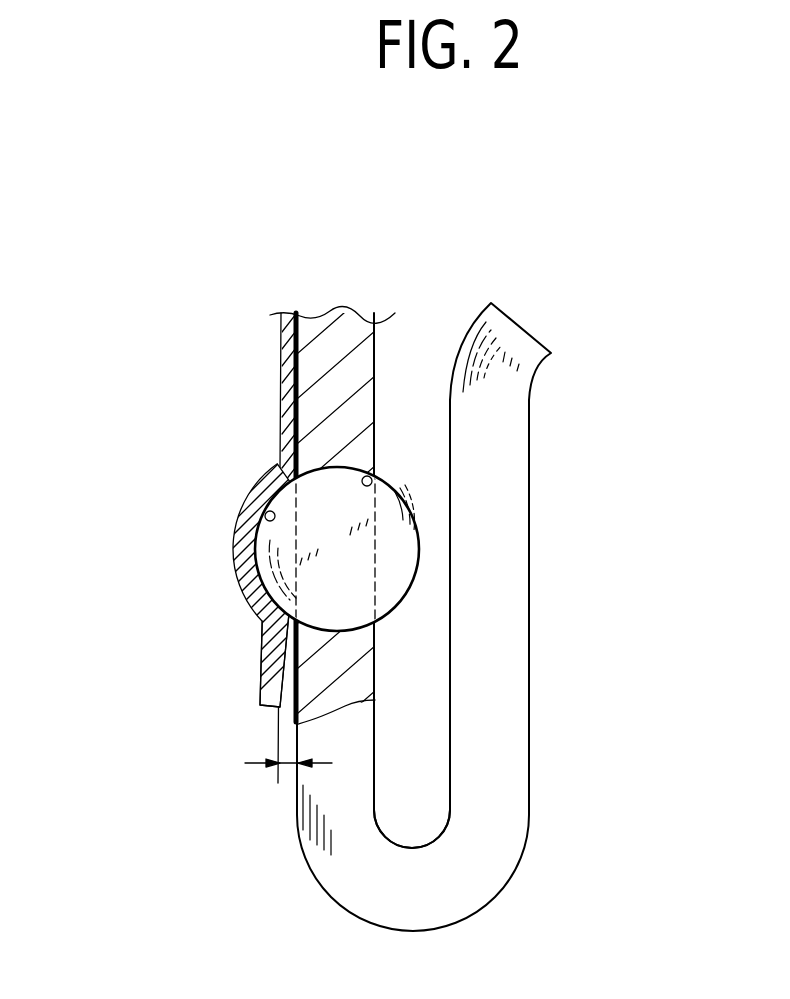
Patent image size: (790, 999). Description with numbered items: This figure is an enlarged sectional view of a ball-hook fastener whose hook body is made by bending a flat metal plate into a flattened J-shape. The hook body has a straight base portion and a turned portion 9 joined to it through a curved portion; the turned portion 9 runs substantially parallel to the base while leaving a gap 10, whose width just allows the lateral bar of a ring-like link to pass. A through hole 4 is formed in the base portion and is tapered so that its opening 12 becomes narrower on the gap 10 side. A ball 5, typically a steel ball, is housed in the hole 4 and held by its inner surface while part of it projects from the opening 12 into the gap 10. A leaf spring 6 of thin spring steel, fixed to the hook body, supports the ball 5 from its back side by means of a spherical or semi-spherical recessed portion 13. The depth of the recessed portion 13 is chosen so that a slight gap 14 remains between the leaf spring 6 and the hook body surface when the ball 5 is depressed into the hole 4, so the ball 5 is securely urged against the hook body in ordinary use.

The through hole 4 is at (280, 456).
The ball 5 is at (272, 550).
The leaf spring 6 is at (281, 348).
The turned portion 9 is at (508, 593).
The gap 10 is at (425, 727).
The opening 12 is at (380, 485).
The recessed portion 13 is at (245, 500).
The slight gap 14 is at (290, 766).